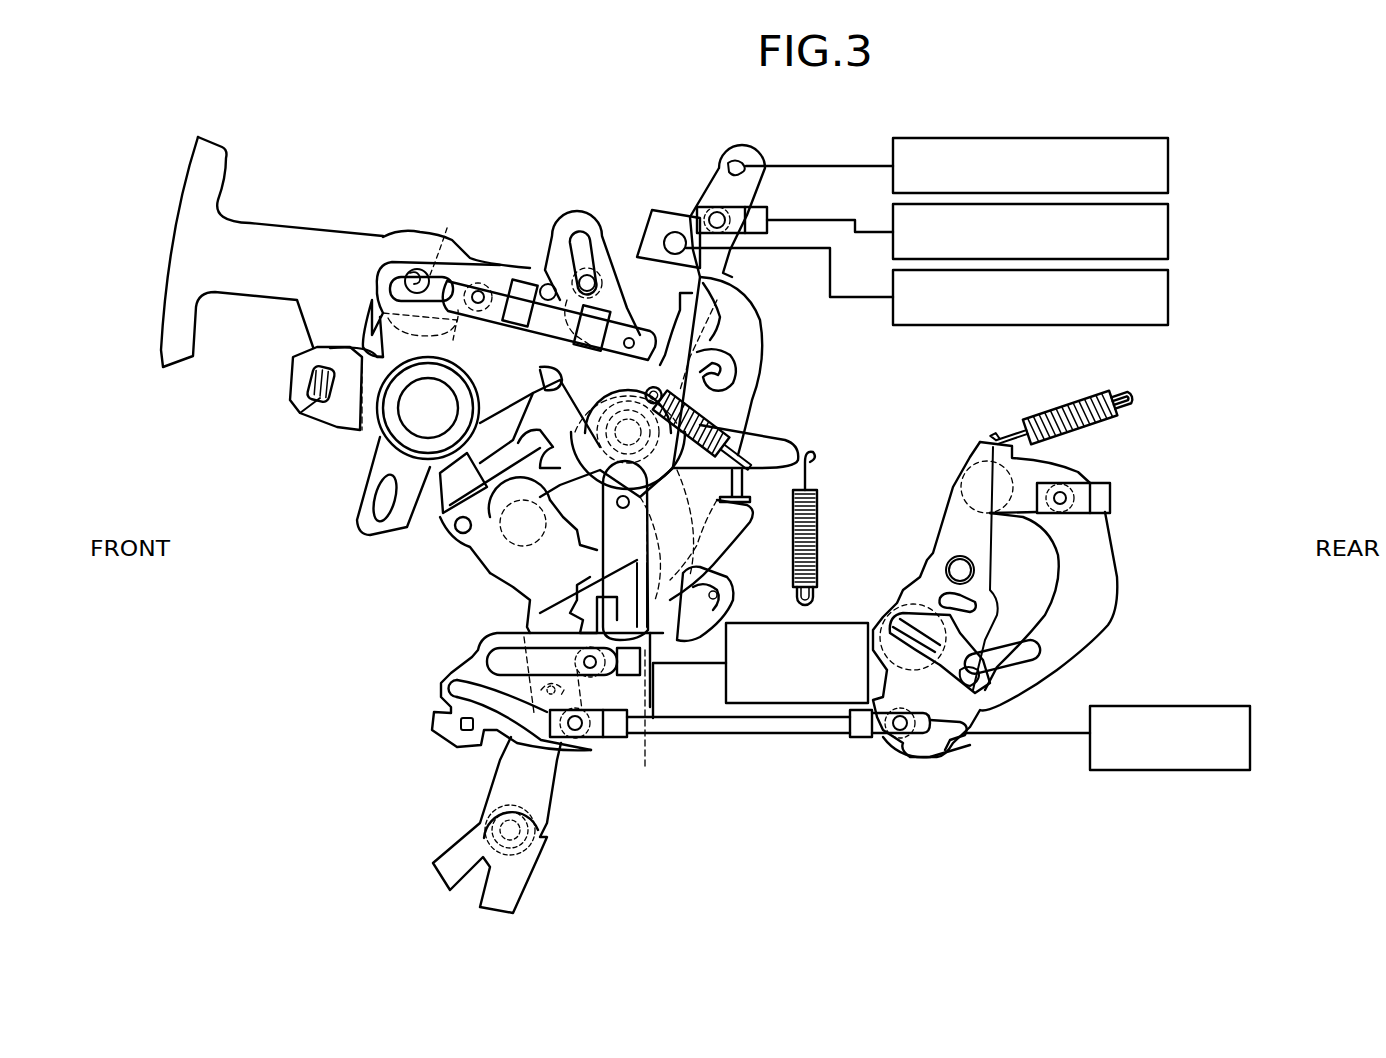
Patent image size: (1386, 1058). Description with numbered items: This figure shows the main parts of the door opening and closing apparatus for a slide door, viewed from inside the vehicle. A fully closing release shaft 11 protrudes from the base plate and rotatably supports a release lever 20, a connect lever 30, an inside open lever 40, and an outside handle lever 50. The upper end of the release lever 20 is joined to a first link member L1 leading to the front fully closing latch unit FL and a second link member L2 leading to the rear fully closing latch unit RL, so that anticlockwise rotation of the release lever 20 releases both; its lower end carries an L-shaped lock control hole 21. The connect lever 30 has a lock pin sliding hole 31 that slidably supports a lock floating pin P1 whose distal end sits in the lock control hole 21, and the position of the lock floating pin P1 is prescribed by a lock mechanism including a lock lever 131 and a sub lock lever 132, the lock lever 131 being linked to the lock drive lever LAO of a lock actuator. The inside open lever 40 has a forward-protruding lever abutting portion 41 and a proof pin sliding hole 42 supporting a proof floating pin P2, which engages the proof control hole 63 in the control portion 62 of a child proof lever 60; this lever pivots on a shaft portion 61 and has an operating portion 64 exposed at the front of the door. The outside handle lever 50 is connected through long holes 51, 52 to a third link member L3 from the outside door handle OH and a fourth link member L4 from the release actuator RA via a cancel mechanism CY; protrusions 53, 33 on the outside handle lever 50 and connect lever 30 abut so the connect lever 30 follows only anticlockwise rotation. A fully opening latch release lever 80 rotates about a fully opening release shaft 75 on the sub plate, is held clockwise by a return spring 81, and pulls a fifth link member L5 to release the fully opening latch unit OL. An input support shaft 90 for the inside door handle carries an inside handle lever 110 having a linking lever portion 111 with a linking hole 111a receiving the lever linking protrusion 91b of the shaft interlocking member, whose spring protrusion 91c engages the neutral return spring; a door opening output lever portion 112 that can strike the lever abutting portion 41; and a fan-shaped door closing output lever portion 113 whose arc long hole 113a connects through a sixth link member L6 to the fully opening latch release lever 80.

The operating portion 64 is at (250, 136).
The arc long hole 113a is at (412, 276).
The child proof lever 60 is at (417, 240).
The door closing output lever portion 113 is at (385, 268).
The shaft portion 61 is at (435, 241).
The connect lever 30 is at (547, 268).
The proof control hole 63 is at (524, 292).
The control portion 62 is at (544, 286).
The inside open lever 40 is at (570, 224).
The proof pin sliding hole 42 is at (582, 234).
The proof floating pin P2 is at (594, 276).
The fully opening latch release lever 80 is at (662, 222).
The release lever 20 is at (727, 160).
The first link member L1 is at (812, 148).
The second link member L2 is at (812, 208).
The fifth link member L5 is at (845, 280).
The outside handle lever 50 is at (760, 320).
The return spring 81 is at (705, 405).
The fully opening release shaft 75 is at (708, 420).
The fully closing release shaft 11 is at (737, 431).
The protrusion 33 is at (740, 481).
The protrusion 53 is at (746, 510).
The lock floating pin P1 is at (722, 562).
The lock control hole 21 is at (710, 593).
The outside door handle OH is at (858, 623).
The lever linking protrusion 91b is at (313, 380).
The linking lever portion 111 is at (290, 407).
The linking hole 111a is at (318, 402).
The input support shaft 90 is at (413, 421).
The inside handle lever 110 is at (377, 433).
The lever abutting portion 41 is at (445, 507).
The spring protrusion 91c is at (447, 520).
The lock lever 131 is at (503, 560).
The sub lock lever 132 is at (517, 597).
The long hole 51 is at (480, 647).
The long hole 52 is at (451, 673).
The lock pin sliding hole 31 is at (620, 722).
The lock drive lever LAO is at (540, 793).
The third link member L3 is at (693, 665).
The fourth link member L4 is at (768, 738).
The release actuator RA is at (1202, 707).
The cancel mechanism CY is at (1165, 630).
The sixth link member L6 is at (530, 330).
The door opening output lever portion 112 is at (574, 330).
The front fully closing latch unit FL is at (1169, 167).
The rear fully closing latch unit RL is at (1169, 233).
The fully opening latch unit OL is at (1169, 298).